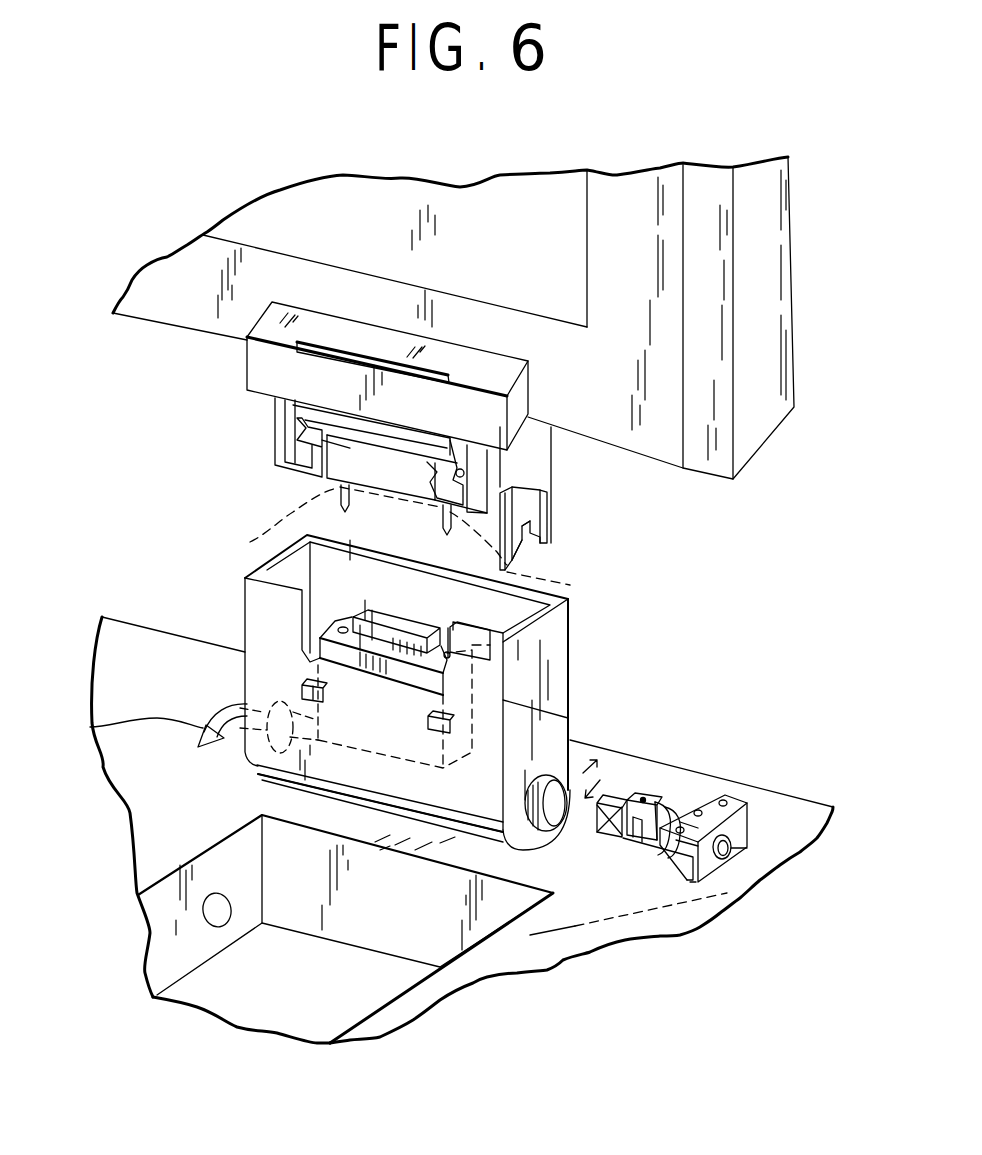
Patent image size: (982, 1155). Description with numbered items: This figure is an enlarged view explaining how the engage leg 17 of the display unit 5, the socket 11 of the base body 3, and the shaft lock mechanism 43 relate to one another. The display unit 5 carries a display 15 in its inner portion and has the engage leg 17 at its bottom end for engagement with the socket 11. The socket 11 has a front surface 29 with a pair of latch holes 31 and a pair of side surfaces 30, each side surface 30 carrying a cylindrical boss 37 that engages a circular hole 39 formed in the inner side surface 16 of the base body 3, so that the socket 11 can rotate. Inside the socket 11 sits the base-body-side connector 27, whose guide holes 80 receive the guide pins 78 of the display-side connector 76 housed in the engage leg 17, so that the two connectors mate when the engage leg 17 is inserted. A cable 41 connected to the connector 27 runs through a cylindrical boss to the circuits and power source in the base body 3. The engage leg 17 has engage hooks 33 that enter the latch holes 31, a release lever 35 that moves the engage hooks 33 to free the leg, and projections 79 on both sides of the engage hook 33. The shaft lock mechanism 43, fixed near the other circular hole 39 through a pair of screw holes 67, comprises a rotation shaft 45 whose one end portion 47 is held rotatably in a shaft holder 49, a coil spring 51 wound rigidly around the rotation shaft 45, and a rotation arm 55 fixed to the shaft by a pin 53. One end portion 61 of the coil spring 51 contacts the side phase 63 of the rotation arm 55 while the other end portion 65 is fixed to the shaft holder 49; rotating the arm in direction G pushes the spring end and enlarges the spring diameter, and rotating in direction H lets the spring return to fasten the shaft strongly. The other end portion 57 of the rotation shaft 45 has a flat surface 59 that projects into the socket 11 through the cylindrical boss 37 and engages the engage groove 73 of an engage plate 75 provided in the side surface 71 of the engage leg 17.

The base body 3 is at (735, 845).
The display unit 5 is at (766, 281).
The socket 11 is at (570, 630).
The display 15 is at (253, 236).
The inner side surface 16 is at (167, 947).
The engage leg 17 is at (325, 489).
The connector 27 is at (318, 640).
The front surface 29 is at (482, 800).
The side surface 30 is at (547, 697).
The latch hole 31 is at (303, 687).
The engage hook 33 is at (300, 447).
The release lever 35 is at (278, 396).
The cylindrical boss 37 is at (527, 843).
The circular hole 39 is at (220, 917).
The cable 41 is at (245, 707).
The shaft lock mechanism 43 is at (737, 795).
The rotation shaft 45 is at (640, 848).
The one end portion 47 is at (732, 847).
The shaft holder 49 is at (752, 823).
The coil spring 51 is at (697, 800).
The pin 53 is at (670, 797).
The rotation arm 55 is at (653, 795).
The other end portion 57 is at (620, 800).
The flat surface 59 is at (620, 840).
The one end portion 61 is at (660, 848).
The side phase 63 is at (645, 797).
The other end portion 65 is at (750, 802).
The screw holes 67 is at (752, 822).
The side surface 71 is at (540, 492).
The engage groove 73 is at (547, 557).
The engage plate 75 is at (547, 533).
The connector 76 is at (322, 470).
The guide pin 78 is at (273, 532).
The projection 79 is at (462, 473).
The guide hole 80 is at (340, 630).